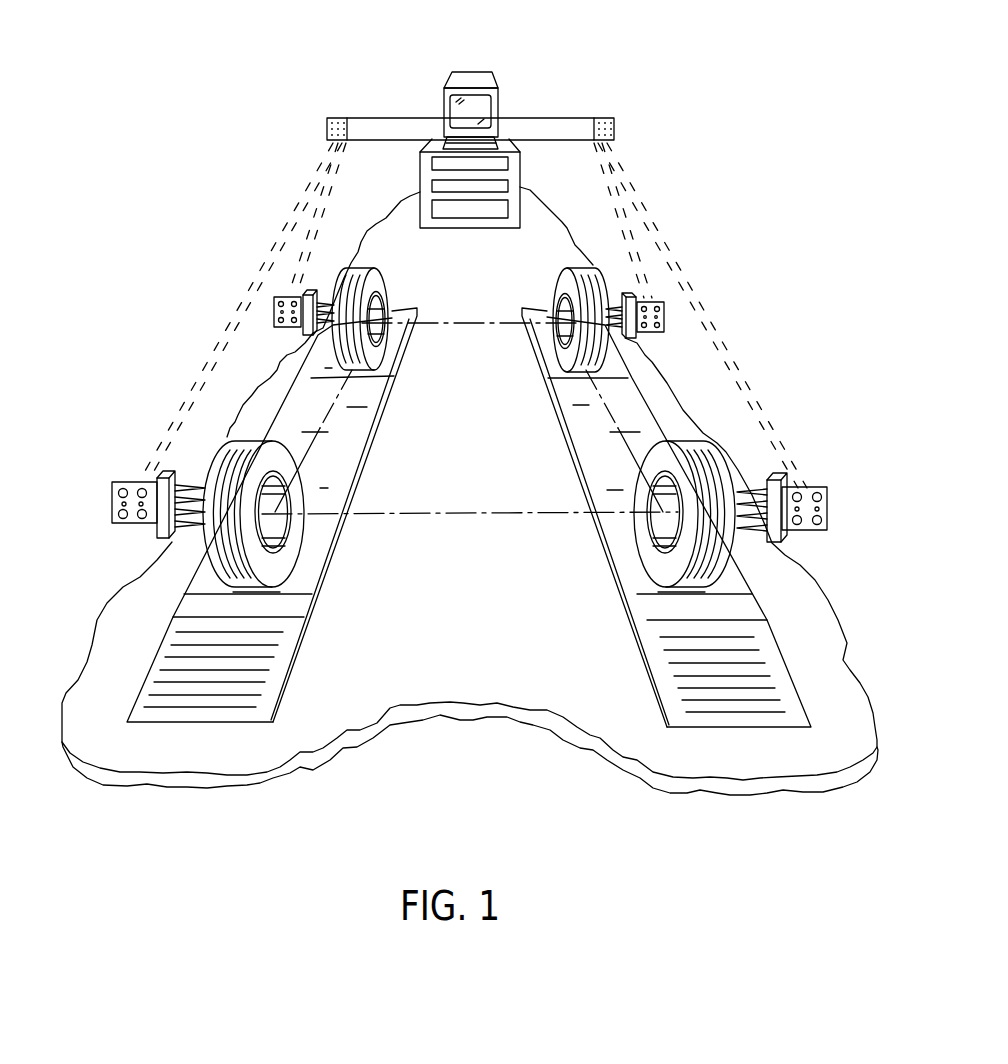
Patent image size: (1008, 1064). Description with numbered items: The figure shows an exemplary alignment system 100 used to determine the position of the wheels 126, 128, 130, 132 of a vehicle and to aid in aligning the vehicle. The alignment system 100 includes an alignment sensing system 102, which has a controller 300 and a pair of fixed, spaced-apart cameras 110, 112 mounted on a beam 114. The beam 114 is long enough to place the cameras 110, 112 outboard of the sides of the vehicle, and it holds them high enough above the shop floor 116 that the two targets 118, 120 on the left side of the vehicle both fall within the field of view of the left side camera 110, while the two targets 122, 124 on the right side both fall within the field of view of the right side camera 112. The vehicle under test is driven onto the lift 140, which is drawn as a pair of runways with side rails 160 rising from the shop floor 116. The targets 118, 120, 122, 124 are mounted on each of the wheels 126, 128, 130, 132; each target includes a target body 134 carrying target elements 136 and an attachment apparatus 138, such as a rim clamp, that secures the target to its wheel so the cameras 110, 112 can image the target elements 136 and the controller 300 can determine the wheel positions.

The alignment system 100 is at (807, 270).
The alignment sensing system 102 is at (584, 76).
The left side camera 110 is at (327, 121).
The right side camera 112 is at (616, 123).
The beam 114 is at (413, 118).
The shop floor 116 is at (389, 231).
The target 118 is at (273, 312).
The target 120 is at (130, 482).
The target 122 is at (665, 312).
The target 124 is at (803, 540).
The wheel 126 is at (380, 352).
The wheel 128 is at (292, 557).
The wheel 130 is at (560, 351).
The wheel 132 is at (642, 549).
The target body 134 is at (813, 483).
The target elements 136 is at (821, 520).
The attachment apparatus 138 is at (762, 478).
The lift 140 is at (557, 440).
The ramp side rails 160 is at (395, 384).
The controller 300 is at (474, 82).